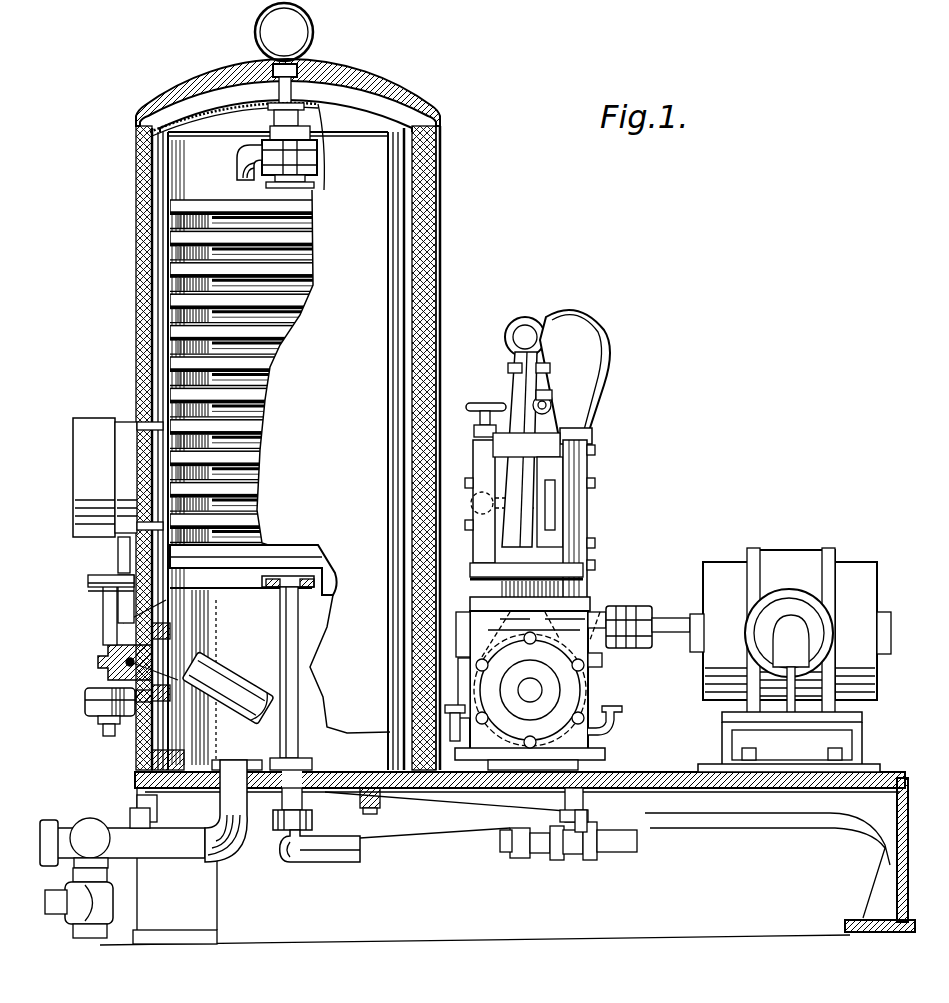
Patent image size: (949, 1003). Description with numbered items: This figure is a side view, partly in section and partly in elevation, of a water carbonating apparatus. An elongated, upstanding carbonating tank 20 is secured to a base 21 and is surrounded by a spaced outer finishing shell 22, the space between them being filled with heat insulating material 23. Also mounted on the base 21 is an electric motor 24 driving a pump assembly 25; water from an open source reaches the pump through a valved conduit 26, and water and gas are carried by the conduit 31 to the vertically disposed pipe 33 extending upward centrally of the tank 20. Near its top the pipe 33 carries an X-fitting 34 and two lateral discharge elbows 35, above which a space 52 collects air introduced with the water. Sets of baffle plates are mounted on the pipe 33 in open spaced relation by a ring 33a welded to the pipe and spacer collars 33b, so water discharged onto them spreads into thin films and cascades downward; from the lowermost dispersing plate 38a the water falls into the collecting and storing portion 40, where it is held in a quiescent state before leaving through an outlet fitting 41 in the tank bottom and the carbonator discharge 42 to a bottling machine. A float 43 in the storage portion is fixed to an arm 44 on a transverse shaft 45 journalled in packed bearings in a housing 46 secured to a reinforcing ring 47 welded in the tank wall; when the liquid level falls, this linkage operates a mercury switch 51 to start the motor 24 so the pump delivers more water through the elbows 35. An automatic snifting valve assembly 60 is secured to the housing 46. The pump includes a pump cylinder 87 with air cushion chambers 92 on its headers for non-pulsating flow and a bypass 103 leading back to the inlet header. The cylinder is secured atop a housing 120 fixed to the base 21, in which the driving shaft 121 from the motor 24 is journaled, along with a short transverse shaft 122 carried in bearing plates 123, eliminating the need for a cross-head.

The carbonating tank 20 is at (392, 188).
The base 21 is at (366, 792).
The outer finishing shell 22 is at (430, 230).
The heat insulating material 23 is at (357, 80).
The electric motor 24 is at (710, 565).
The pump assembly 25 is at (499, 405).
The valved conduit 26 is at (518, 840).
The conduit 31 is at (298, 855).
The vertically disposed pipe 33 is at (292, 743).
The ring 33a is at (328, 594).
The spacer collars 33b is at (310, 286).
The X-fitting 34 is at (303, 160).
The discharge elbows 35 is at (238, 168).
The lowermost dispersing plate 38a is at (248, 583).
The collecting and storing portion 40 is at (150, 757).
The outlet fitting 41 is at (240, 770).
The carbonator discharge 42 is at (62, 912).
The float 43 is at (238, 683).
The arm 44 is at (150, 702).
The transverse shaft 45 is at (134, 662).
The housing 46 is at (108, 660).
The reinforcing ring 47 is at (180, 636).
The mercury switch 51 is at (87, 428).
The space 52 is at (225, 87).
The automatic snifting valve assembly 60 is at (95, 702).
The pump cylinder 87 is at (555, 567).
The air cushion chambers 92 is at (592, 345).
The bypass 103 is at (500, 480).
The housing 120 is at (598, 662).
The driving shaft 121 is at (600, 622).
The transverse shaft 122 is at (533, 700).
The bearing plates 123 is at (538, 690).